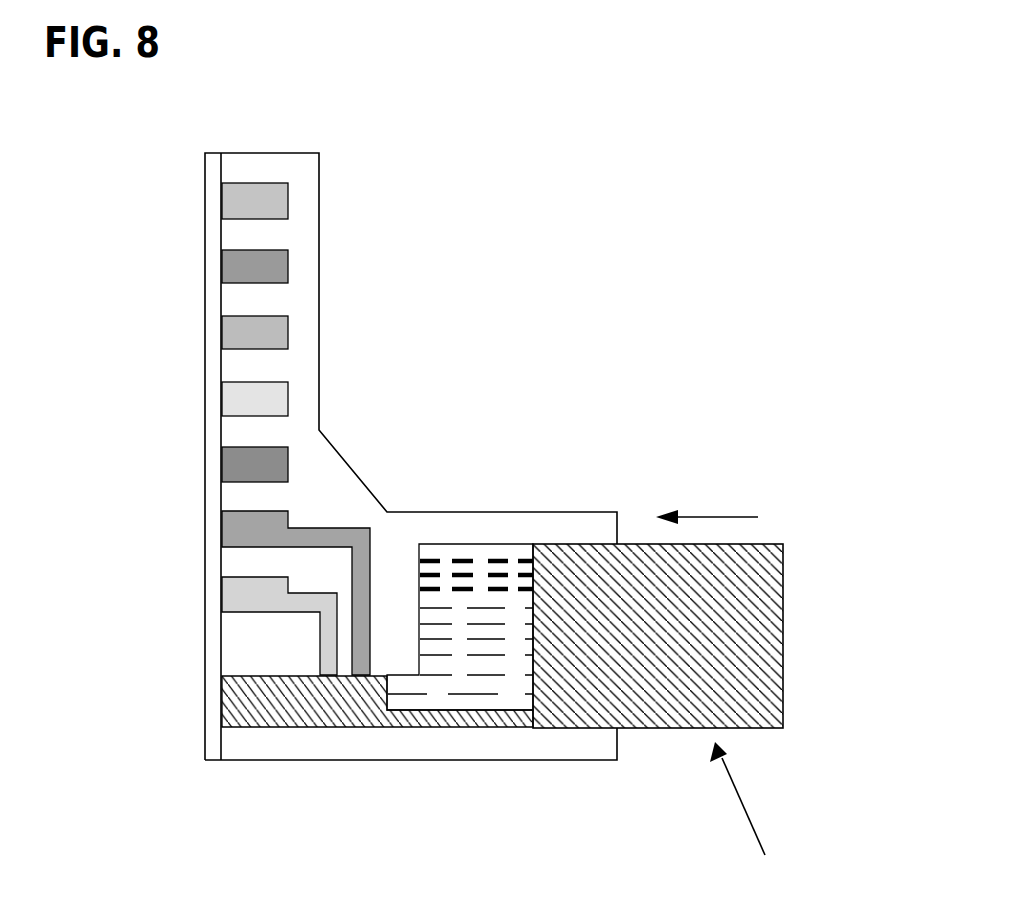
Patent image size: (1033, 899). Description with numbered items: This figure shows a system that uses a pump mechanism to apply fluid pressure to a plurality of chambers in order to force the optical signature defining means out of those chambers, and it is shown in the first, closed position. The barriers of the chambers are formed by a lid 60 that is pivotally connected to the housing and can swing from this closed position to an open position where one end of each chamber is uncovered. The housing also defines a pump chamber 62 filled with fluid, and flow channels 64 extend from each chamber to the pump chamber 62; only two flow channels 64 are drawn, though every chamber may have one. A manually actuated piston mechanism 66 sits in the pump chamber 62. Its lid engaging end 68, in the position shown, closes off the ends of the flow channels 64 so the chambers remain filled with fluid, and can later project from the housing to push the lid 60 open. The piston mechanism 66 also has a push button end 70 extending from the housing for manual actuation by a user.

The lid 60 is at (190, 592).
The pump chamber 62 is at (478, 563).
The flow channels 64 is at (375, 553).
The piston mechanism 66 is at (749, 815).
The lid engaging end 68 is at (223, 707).
The push button end 70 is at (783, 622).